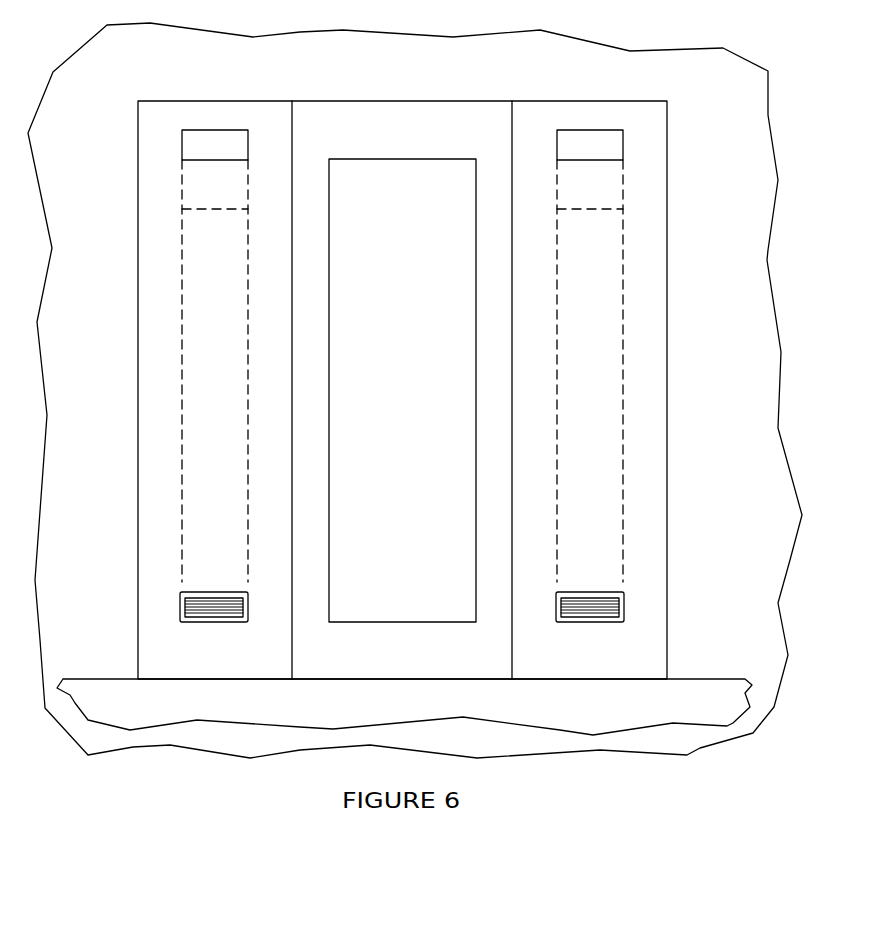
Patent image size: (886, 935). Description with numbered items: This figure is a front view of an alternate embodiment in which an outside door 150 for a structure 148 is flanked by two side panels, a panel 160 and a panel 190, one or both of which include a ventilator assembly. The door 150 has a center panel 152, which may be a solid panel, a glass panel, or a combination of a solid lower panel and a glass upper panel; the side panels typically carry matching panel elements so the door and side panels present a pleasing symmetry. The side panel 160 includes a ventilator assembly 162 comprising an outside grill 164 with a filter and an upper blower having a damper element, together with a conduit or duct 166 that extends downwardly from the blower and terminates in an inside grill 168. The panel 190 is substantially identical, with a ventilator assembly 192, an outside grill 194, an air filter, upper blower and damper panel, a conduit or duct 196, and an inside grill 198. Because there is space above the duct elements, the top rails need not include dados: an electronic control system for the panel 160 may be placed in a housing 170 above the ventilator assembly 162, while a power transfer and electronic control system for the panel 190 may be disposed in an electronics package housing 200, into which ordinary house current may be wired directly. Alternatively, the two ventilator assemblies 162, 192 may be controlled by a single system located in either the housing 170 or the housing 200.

The structure 148 is at (566, 36).
The outside door 150 is at (394, 99).
The center panel 152 is at (421, 241).
The side panel 190 is at (194, 99).
The electronics package housing 200 is at (205, 131).
The ventilator assembly 192 is at (181, 175).
The outside grill 194 is at (195, 187).
The conduit or duct 196 is at (181, 272).
The inside grill 198 is at (180, 597).
The side panel 160 is at (566, 99).
The housing 170 is at (604, 130).
The ventilator assembly 162 is at (624, 175).
The outside grill 164 is at (611, 199).
The right duct 166 is at (623, 323).
The inside grill 168 is at (623, 611).